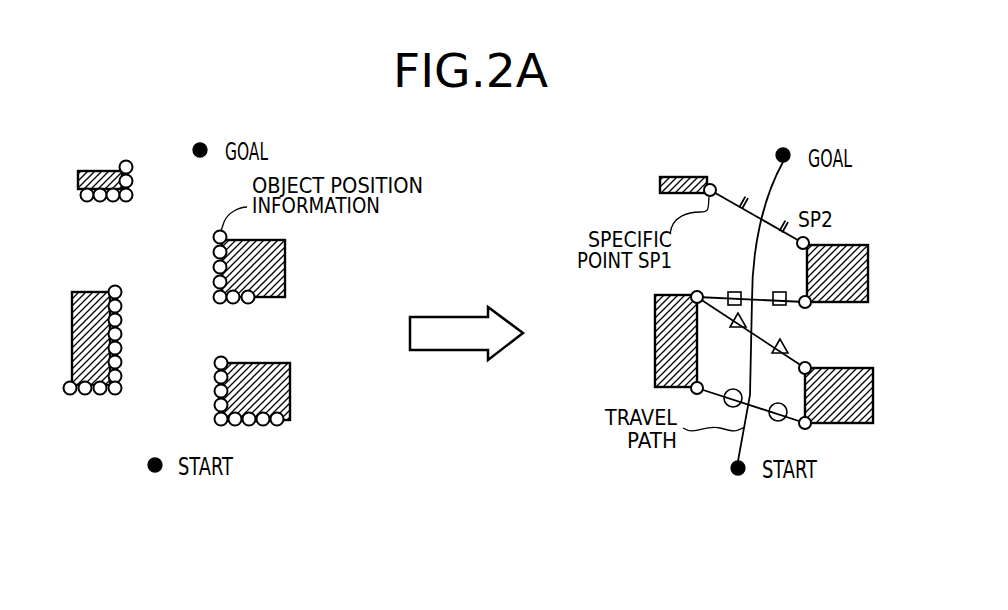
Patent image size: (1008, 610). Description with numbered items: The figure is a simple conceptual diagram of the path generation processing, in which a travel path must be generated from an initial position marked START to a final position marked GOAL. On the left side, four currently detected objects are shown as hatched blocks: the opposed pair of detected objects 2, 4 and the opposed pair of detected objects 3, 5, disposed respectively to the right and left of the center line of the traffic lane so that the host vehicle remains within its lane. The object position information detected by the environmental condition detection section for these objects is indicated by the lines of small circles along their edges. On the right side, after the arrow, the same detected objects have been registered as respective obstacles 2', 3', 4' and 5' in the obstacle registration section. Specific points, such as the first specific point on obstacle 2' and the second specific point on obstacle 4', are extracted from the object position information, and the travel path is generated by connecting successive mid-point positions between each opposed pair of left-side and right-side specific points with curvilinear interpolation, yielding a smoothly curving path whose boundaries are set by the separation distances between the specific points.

The detected object 2 is at (105, 160).
The detected object 3 is at (93, 315).
The detected object 4 is at (281, 267).
The detected object 5 is at (282, 391).
The obstacle 2' is at (668, 159).
The obstacle 3' is at (646, 341).
The obstacle 4' is at (840, 246).
The obstacle 5' is at (839, 368).